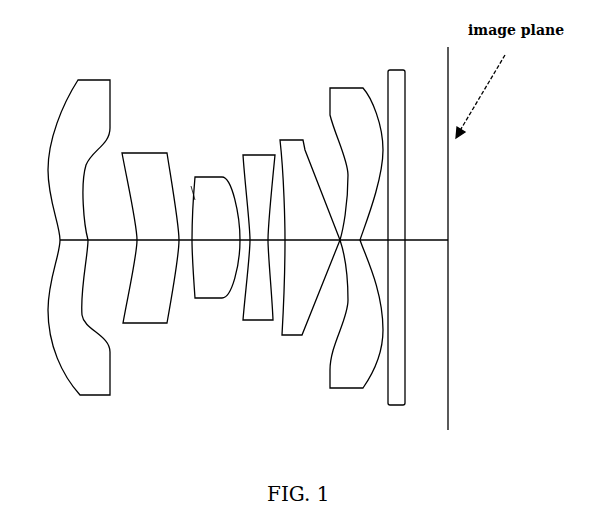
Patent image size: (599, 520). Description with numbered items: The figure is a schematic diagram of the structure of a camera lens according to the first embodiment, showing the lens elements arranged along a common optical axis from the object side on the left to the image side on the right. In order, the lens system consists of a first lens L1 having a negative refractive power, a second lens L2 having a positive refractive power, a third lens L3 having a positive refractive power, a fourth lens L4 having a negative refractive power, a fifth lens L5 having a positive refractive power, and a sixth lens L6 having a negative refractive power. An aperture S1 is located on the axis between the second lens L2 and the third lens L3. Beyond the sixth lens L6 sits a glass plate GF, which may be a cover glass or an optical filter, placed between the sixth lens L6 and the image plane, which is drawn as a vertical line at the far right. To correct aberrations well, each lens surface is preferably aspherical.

The first lens L1 is at (79, 237).
The second lens L2 is at (150, 238).
The third lens L3 is at (216, 237).
The fourth lens L4 is at (259, 237).
The fifth lens L5 is at (310, 237).
The sixth lens L6 is at (356, 238).
The aperture S1 is at (193, 193).
The glass plate GF is at (396, 227).